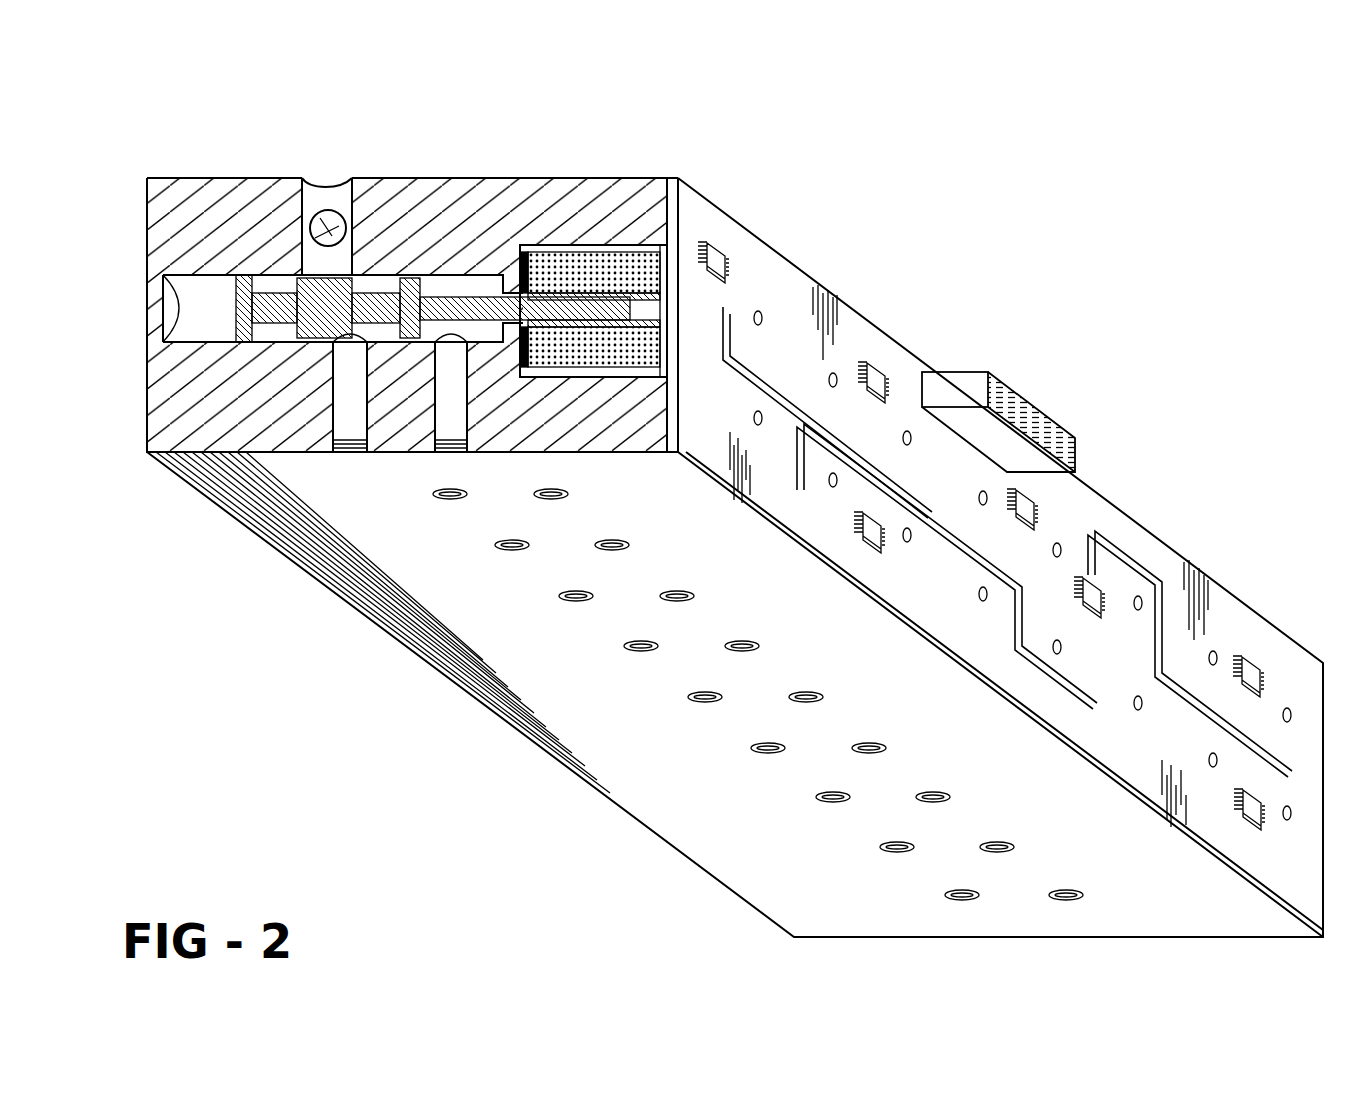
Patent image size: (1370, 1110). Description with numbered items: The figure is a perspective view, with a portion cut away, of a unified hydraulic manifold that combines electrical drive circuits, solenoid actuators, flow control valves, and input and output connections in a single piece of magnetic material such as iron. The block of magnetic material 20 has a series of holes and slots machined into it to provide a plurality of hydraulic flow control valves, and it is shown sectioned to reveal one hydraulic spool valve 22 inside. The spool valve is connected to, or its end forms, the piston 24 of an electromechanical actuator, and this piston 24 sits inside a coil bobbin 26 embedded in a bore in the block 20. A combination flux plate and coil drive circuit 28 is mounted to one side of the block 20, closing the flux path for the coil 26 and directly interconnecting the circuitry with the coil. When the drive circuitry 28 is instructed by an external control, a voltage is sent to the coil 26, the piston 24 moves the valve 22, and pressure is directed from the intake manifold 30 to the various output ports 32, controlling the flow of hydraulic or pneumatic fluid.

The block of magnetic material 20 is at (433, 572).
The hydraulic spool valve 22 is at (471, 295).
The piston 24 is at (632, 307).
The coil bobbin 26 is at (592, 250).
The combination flux plate and coil drive circuit 28 is at (863, 348).
The intake manifold 30 is at (327, 212).
The output ports 32 is at (752, 748).